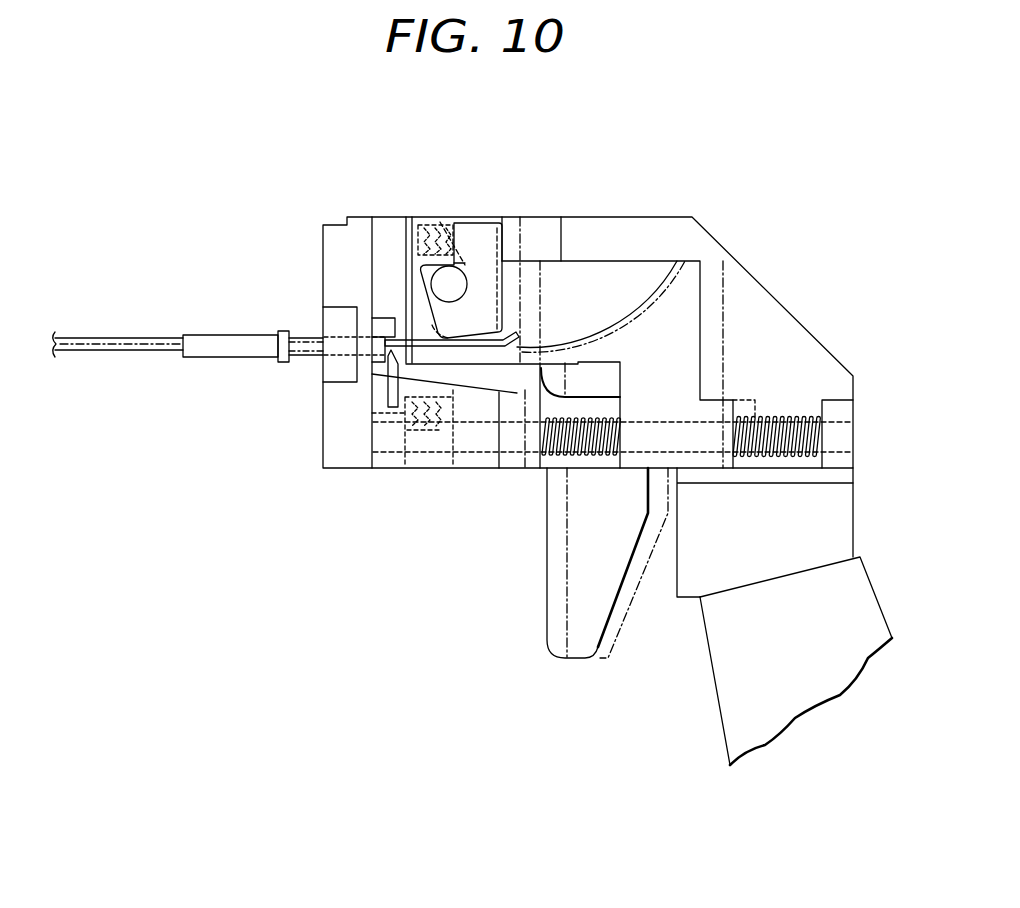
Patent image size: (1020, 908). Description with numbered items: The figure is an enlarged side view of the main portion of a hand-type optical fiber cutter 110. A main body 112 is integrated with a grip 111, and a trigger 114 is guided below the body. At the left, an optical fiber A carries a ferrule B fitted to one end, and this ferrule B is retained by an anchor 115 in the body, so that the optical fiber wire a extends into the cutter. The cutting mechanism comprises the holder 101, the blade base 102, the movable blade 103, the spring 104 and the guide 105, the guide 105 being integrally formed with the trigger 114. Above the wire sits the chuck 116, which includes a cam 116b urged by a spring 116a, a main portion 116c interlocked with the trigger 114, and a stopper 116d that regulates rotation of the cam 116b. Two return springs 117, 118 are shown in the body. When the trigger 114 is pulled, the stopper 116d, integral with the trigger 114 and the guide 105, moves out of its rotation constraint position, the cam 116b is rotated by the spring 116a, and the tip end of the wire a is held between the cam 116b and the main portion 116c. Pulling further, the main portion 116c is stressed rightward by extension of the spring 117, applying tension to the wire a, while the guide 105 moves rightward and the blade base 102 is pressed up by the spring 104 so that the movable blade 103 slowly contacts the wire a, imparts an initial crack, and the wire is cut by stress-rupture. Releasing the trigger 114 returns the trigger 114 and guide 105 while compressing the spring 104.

The cutter 110 is at (800, 295).
The main body 112 is at (700, 240).
The grip 111 is at (730, 695).
The trigger 114 is at (553, 618).
The return spring 117 is at (557, 455).
The return spring 118 is at (820, 437).
The chuck 116 is at (662, 163).
The spring 116a is at (436, 226).
The cam 116b is at (482, 240).
The main portion 116c is at (640, 332).
The stopper 116d is at (530, 227).
The anchor 115 is at (333, 323).
The movable blade 103 is at (386, 368).
The blade base 102 is at (382, 423).
The holder 101 is at (352, 457).
The spring 104 is at (432, 448).
The guide 105 is at (488, 380).
The optical fiber wire a is at (512, 330).
The optical fiber A is at (125, 340).
The ferrule B is at (233, 340).